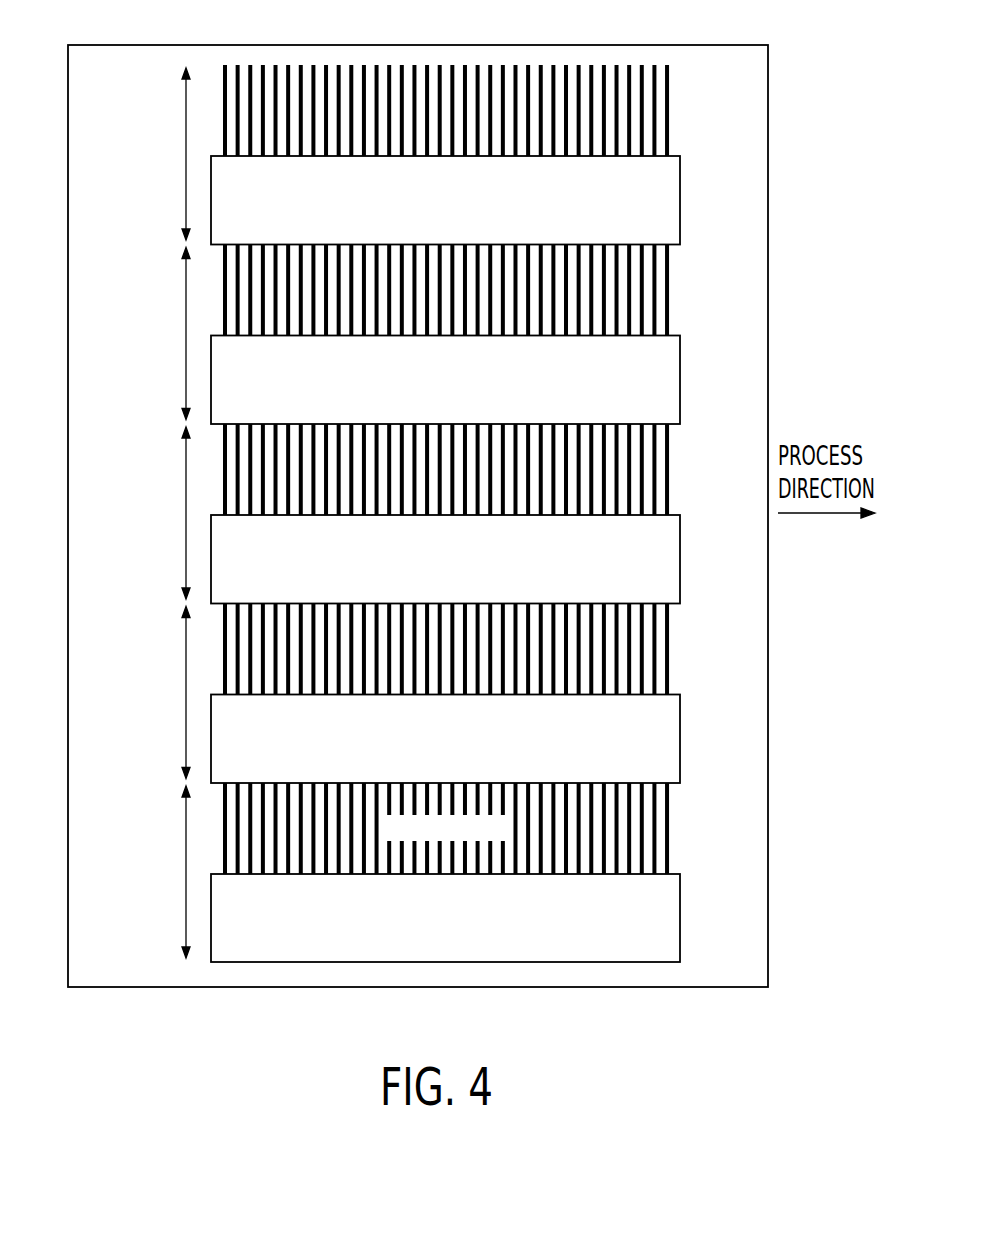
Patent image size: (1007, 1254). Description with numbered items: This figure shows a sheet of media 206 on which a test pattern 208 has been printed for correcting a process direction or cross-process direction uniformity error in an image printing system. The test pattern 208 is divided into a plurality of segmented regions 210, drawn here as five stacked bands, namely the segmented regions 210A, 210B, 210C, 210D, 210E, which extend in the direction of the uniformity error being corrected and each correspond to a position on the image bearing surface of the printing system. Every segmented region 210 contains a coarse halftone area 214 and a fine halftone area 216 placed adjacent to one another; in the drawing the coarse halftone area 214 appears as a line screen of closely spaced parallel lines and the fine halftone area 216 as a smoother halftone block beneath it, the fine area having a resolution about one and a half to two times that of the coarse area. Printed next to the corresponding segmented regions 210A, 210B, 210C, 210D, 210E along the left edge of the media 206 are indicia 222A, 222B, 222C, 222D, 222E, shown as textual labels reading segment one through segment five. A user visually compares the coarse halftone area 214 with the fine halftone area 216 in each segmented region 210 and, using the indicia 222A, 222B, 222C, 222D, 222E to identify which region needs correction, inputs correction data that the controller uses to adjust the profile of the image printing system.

The media 206 is at (769, 265).
The test pattern 208 is at (488, 108).
The segmented region 210 is at (697, 742).
The segmented region 210A is at (481, 878).
The segmented region 210B is at (688, 606).
The segmented region 210C is at (688, 426).
The segmented region 210D is at (688, 246).
The segmented region 210E is at (481, 153).
The coarse halftone area 214 is at (662, 822).
The fine halftone area 216 is at (481, 924).
The indicia 222A is at (130, 911).
The indicia 222B is at (130, 732).
The indicia 222C is at (130, 552).
The indicia 222D is at (130, 372).
The indicia 222E is at (130, 193).